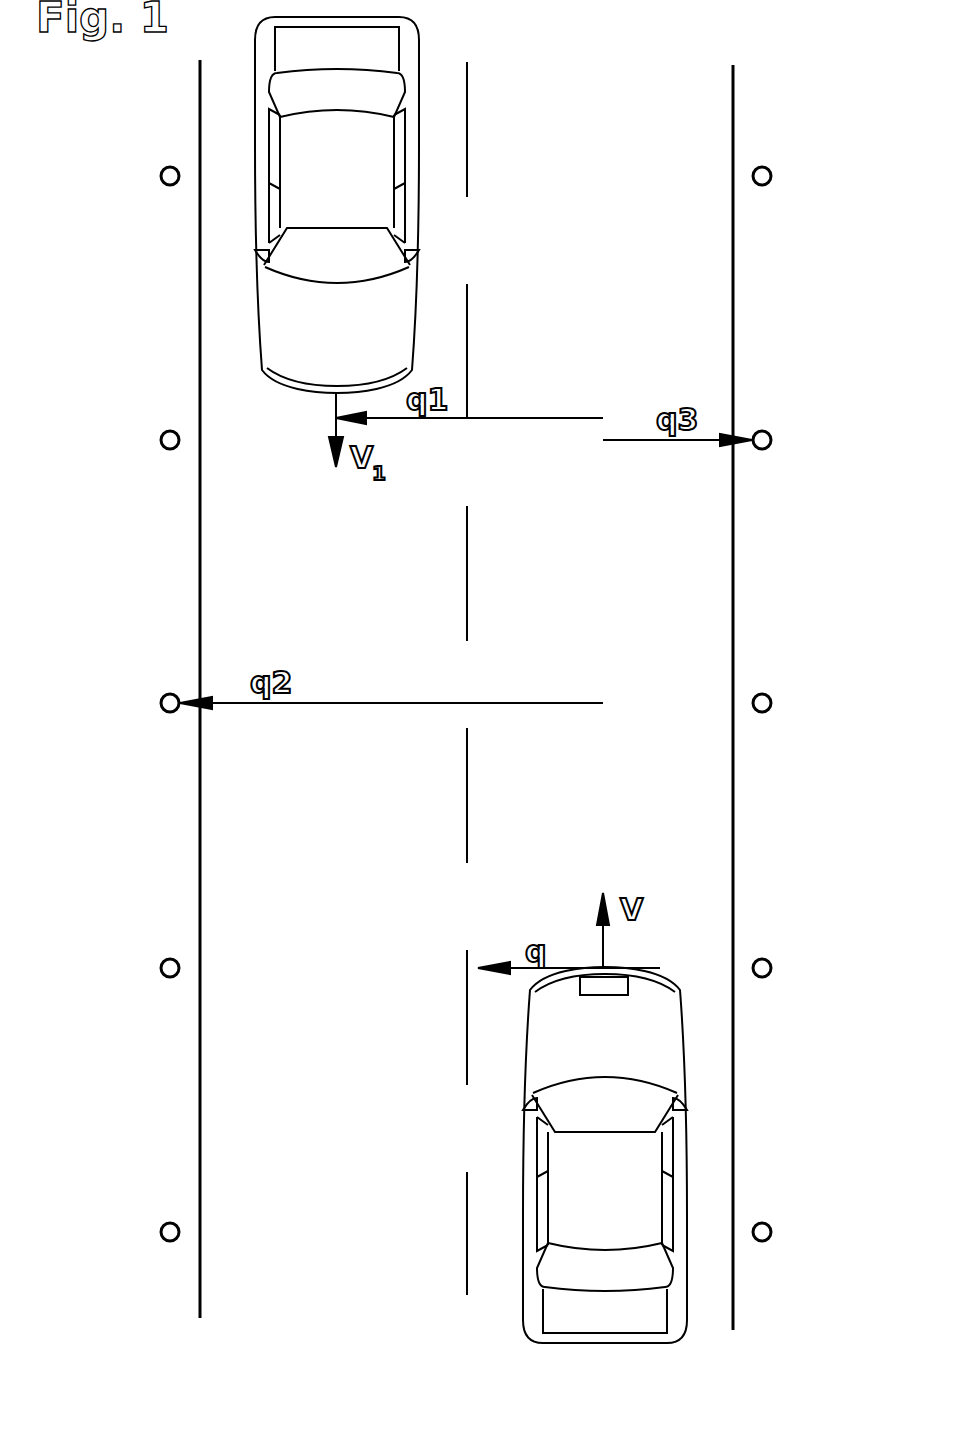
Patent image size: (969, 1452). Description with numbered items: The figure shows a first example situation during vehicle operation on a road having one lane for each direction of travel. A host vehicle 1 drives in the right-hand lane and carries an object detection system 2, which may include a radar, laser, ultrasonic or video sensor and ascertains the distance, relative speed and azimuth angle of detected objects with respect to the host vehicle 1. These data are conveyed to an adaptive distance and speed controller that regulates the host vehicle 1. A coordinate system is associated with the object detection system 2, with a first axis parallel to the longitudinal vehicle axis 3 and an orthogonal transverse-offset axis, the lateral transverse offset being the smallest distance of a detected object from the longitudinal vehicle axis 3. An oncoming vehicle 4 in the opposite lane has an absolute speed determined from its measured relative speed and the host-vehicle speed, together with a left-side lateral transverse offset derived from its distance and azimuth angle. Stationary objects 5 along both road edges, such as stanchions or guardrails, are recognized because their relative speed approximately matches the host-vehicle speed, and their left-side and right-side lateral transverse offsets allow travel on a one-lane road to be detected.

The host vehicle 1 is at (633, 1313).
The object detection system 2 is at (605, 990).
The longitudinal vehicle axis 3 is at (605, 228).
The oncoming vehicle 4 is at (370, 47).
The stationary objects 5 is at (160, 176).